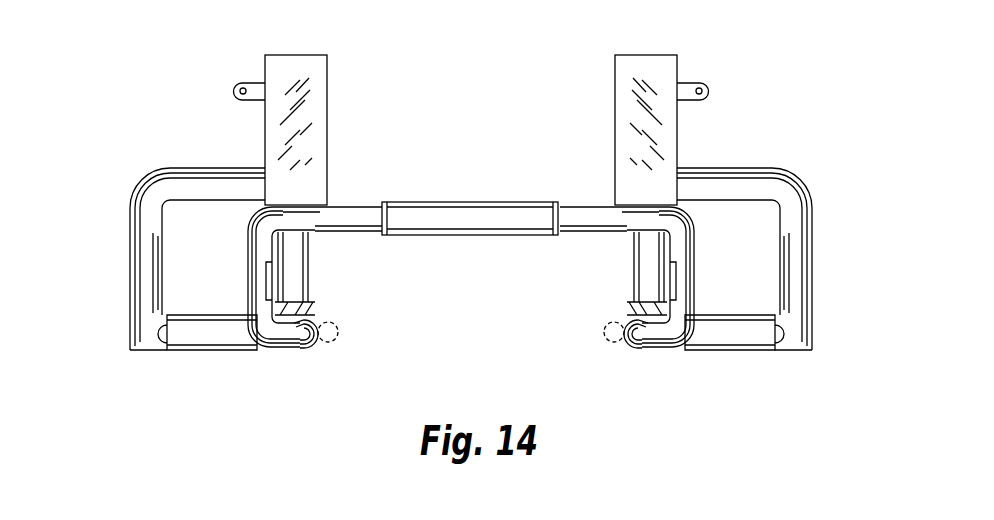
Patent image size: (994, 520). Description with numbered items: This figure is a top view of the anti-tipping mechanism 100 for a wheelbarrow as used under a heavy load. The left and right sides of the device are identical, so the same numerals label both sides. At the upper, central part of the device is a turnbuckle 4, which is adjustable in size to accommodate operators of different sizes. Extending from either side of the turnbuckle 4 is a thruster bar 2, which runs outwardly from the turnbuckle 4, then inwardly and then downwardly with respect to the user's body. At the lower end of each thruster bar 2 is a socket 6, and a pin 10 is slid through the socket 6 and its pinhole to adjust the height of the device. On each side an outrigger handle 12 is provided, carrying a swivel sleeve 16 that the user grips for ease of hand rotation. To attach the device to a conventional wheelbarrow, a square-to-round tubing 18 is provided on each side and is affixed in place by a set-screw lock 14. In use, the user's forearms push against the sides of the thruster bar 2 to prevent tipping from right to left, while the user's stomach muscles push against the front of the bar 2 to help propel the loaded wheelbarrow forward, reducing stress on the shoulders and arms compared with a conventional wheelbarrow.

The electrical connector assembly 100 is at (177, 48).
The thruster bar 2 is at (346, 206).
The turnbuckle 4 is at (482, 202).
The socket 6 is at (292, 347).
The pin 10 is at (322, 342).
The outrigger handle 12 is at (136, 188).
The set-screw lock 14 is at (234, 91).
The swivel sleeve 16 is at (188, 352).
The square-to-round tubing 18 is at (330, 118).